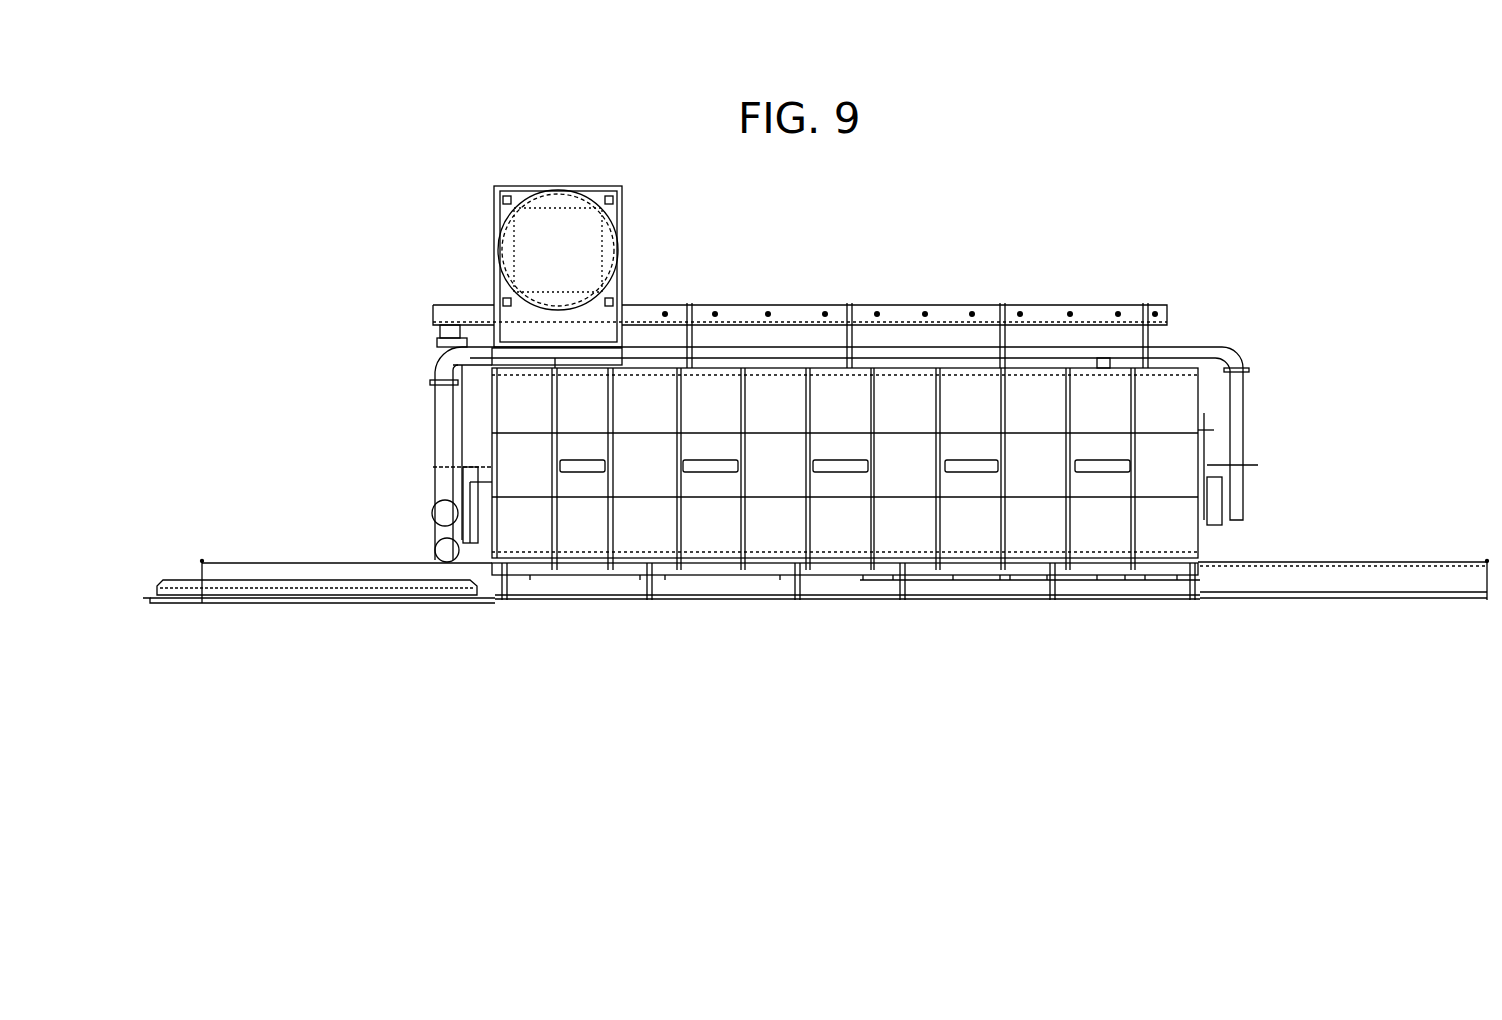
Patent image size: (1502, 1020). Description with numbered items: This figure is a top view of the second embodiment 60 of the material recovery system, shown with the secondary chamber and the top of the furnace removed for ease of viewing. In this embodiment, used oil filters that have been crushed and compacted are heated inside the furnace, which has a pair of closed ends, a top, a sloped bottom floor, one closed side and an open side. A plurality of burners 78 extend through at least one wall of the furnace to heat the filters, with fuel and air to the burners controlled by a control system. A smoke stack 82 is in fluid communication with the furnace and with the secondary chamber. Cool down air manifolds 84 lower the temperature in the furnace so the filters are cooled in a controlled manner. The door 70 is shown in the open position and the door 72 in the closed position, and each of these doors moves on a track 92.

The second embodiment 60 is at (1203, 262).
The door 70 is at (247, 582).
The door 72 is at (1085, 572).
The burners 78 is at (473, 493).
The smoke stack 82 is at (612, 252).
The cool down air manifolds 84 is at (765, 316).
The track 92 is at (1338, 598).